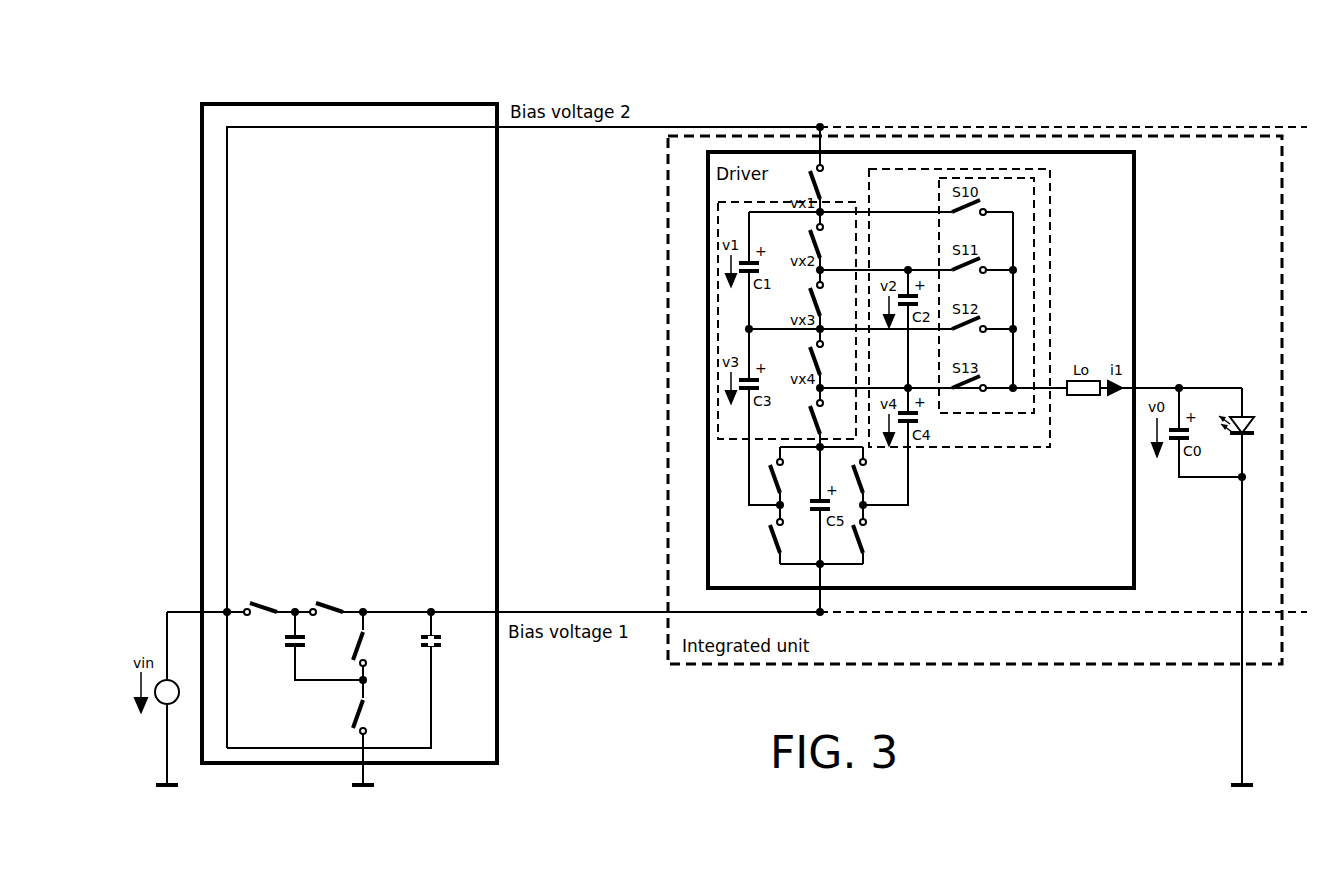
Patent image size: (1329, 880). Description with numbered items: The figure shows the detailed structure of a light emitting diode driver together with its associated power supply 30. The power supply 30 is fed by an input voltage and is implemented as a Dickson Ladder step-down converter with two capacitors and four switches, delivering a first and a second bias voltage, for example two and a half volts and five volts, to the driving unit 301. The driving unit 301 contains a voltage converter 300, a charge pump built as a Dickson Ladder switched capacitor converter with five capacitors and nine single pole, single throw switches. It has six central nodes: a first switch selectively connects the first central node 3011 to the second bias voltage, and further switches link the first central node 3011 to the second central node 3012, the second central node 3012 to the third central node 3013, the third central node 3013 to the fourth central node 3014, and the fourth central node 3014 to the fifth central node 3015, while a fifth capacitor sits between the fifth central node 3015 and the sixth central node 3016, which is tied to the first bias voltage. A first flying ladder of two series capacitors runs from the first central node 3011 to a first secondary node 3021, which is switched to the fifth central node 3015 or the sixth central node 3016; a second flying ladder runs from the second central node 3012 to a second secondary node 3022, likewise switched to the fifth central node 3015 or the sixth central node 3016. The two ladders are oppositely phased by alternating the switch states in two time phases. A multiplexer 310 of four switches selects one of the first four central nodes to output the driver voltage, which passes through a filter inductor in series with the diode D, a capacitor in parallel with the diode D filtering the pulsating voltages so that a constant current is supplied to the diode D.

The power supply 30 is at (347, 115).
The voltage converter 300 is at (775, 198).
The driving unit 301 is at (938, 170).
The multiplexer 310 is at (1036, 202).
The first central node 3011 is at (818, 214).
The second central node 3012 is at (818, 284).
The third central node 3013 is at (818, 343).
The fourth central node 3014 is at (818, 402).
The fifth central node 3015 is at (818, 440).
The sixth central node 3016 is at (818, 566).
The first secondary node 3021 is at (777, 520).
The second secondary node 3022 is at (866, 508).
The LED D is at (1250, 412).